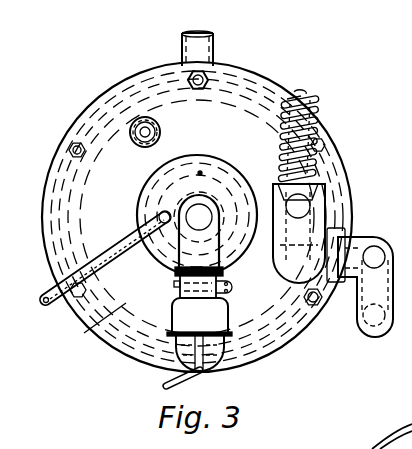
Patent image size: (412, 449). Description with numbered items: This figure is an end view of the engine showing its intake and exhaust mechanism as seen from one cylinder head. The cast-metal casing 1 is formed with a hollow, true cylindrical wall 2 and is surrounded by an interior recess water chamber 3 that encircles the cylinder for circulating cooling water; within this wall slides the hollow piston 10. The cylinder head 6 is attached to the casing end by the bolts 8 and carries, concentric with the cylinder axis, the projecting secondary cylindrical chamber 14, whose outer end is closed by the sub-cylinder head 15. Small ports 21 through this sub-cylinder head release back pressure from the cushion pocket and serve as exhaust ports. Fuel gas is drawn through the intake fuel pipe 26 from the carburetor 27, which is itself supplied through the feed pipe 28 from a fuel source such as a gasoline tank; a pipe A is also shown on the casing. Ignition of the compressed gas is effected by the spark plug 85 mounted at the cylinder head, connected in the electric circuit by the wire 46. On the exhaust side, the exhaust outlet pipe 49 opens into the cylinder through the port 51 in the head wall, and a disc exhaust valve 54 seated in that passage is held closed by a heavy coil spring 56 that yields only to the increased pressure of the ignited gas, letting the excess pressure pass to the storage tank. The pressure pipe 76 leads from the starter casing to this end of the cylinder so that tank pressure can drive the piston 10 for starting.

The casing 1 is at (252, 76).
The cylindrical wall 2 is at (248, 102).
The recess water chamber 3 is at (228, 80).
The inlet pipe A is at (214, 48).
The cylinder head 6 is at (296, 97).
The bolts 8 is at (322, 142).
The piston 10 is at (98, 326).
The secondary cylindrical chamber 14 is at (219, 165).
The sub-cylinder head 15 is at (208, 208).
The ports 21 is at (201, 171).
The intake fuel pipe 26 is at (176, 208).
The carburetor 27 is at (178, 362).
The feed pipe 28 is at (166, 387).
The wire 46 is at (138, 122).
The exhaust outlet pipe 49 is at (366, 250).
The port 51 is at (312, 212).
The disc exhaust valve 54 is at (328, 242).
The coil spring 56 is at (316, 106).
The pressure pipe 76 is at (46, 306).
The spark plug 85 is at (145, 117).